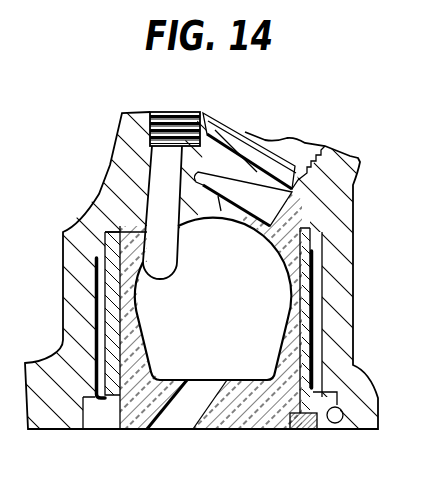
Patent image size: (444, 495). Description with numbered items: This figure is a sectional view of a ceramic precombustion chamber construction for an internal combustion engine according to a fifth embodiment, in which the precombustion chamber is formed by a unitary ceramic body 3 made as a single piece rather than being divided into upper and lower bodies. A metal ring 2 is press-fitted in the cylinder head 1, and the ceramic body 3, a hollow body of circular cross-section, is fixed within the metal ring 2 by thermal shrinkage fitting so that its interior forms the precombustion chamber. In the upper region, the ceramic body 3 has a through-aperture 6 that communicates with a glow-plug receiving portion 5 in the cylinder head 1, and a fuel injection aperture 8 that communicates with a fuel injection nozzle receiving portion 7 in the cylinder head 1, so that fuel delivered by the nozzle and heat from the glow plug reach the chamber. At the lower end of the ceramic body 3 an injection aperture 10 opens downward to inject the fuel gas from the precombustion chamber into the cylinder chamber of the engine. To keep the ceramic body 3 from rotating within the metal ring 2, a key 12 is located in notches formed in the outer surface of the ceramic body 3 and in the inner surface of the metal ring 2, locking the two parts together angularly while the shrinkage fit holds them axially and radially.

The cylinder head 1 is at (343, 298).
The metal ring 2 is at (357, 393).
The ceramic body 3 is at (307, 245).
The glow-plug receiving portion 5 is at (160, 118).
The through-aperture 6 is at (148, 172).
The fuel injection nozzle receiving portion 7 is at (305, 167).
The fuel injection aperture 8 is at (247, 130).
The injection aperture 10 is at (188, 403).
The key 12 is at (302, 430).